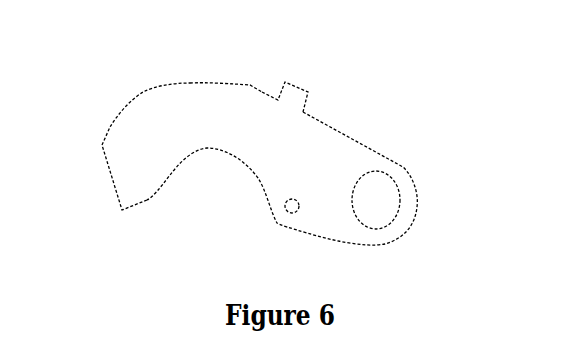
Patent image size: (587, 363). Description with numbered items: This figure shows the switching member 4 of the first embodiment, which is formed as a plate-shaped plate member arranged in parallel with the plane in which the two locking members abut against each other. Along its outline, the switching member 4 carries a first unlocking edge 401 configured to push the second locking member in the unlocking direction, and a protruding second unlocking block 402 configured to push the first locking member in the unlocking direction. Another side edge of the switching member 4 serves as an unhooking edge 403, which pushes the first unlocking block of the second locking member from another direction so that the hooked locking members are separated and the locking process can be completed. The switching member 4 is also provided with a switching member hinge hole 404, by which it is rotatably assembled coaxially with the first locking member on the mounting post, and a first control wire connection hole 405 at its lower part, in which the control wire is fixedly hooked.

The switching member 4 is at (212, 102).
The first unlocking edge 401 is at (112, 182).
The second unlocking block 402 is at (293, 94).
The unhooking edge 403 is at (128, 105).
The switching member hinge hole 404 is at (383, 195).
The first control wire connection hole 405 is at (294, 213).